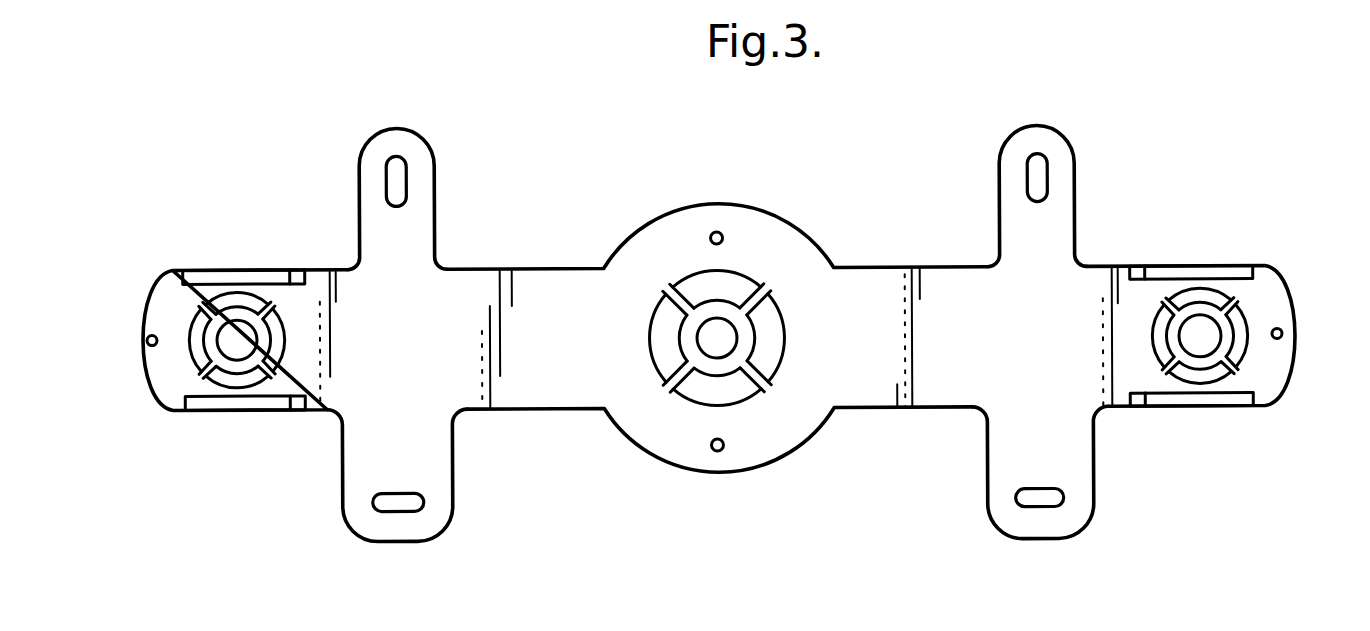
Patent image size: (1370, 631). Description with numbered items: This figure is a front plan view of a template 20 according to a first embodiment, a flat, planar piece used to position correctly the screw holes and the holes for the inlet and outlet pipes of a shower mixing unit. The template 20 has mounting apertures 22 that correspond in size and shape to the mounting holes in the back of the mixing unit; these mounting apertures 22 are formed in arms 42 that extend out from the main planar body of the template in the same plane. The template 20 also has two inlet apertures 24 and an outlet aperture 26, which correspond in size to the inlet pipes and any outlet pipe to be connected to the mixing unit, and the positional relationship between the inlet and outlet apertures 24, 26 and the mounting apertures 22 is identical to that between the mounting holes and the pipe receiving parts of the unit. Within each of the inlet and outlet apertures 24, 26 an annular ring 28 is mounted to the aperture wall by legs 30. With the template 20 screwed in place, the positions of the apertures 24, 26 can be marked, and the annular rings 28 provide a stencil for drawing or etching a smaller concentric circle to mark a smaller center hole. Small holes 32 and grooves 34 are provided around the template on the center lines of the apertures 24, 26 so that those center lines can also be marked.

The template 20 is at (540, 367).
The mounting apertures 22 is at (390, 178).
The inlet apertures 24 is at (192, 342).
The outlet aperture 26 is at (743, 273).
The annular rings 28 is at (222, 308).
The legs 30 is at (214, 376).
The small holes 32 is at (147, 338).
The grooves 34 is at (238, 272).
The arms 42 is at (413, 236).